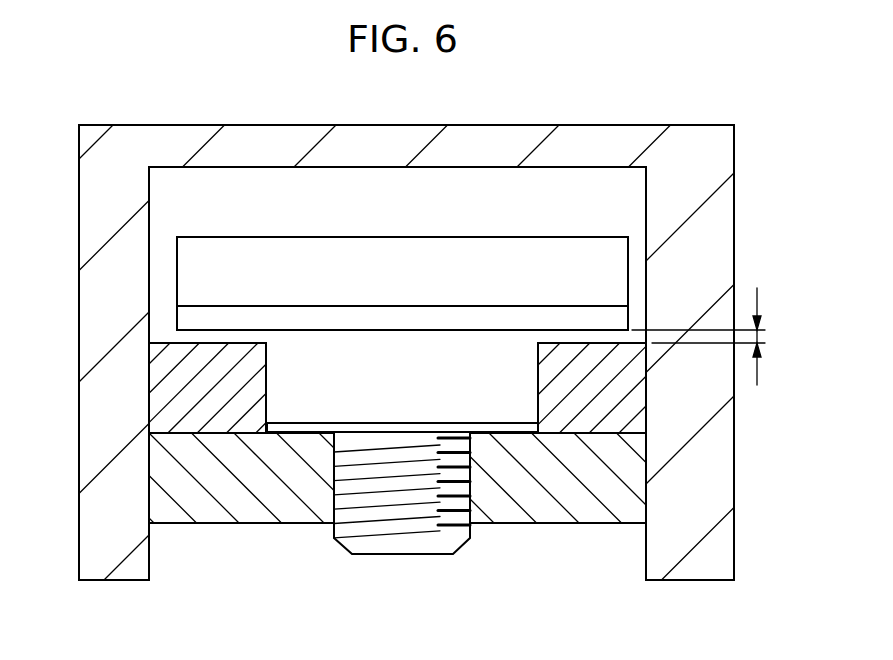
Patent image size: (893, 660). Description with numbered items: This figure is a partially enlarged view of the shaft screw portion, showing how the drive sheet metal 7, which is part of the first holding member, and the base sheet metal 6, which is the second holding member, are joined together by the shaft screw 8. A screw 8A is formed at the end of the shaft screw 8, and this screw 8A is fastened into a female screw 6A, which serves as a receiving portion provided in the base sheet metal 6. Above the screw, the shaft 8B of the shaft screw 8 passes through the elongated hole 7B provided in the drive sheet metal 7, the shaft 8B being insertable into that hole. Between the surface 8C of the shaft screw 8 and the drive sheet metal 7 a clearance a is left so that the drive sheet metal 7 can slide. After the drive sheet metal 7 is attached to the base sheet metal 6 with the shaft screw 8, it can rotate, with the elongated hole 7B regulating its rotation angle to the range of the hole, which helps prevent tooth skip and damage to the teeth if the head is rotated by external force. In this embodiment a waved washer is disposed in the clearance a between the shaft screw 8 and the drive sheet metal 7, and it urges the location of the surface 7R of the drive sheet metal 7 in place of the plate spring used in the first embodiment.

The base sheet metal 6 is at (608, 499).
The female screw 6A is at (470, 462).
The drive sheet metal 7 is at (177, 378).
The elongated hole 7B is at (267, 383).
The surface 7R is at (592, 136).
The shaft screw 8 is at (237, 275).
The screw 8A is at (342, 500).
The shaft 8B is at (493, 386).
The surface 8C is at (598, 330).
The clearance a is at (707, 336).